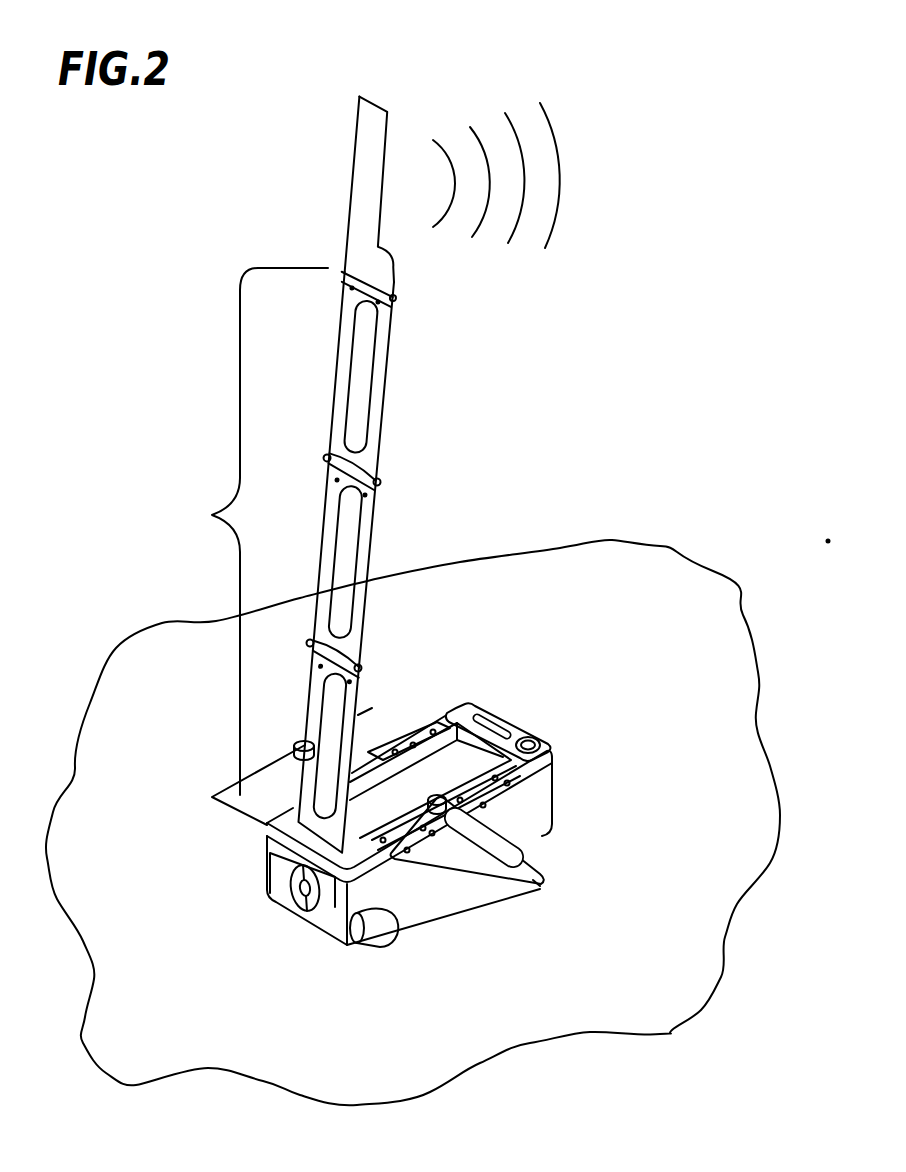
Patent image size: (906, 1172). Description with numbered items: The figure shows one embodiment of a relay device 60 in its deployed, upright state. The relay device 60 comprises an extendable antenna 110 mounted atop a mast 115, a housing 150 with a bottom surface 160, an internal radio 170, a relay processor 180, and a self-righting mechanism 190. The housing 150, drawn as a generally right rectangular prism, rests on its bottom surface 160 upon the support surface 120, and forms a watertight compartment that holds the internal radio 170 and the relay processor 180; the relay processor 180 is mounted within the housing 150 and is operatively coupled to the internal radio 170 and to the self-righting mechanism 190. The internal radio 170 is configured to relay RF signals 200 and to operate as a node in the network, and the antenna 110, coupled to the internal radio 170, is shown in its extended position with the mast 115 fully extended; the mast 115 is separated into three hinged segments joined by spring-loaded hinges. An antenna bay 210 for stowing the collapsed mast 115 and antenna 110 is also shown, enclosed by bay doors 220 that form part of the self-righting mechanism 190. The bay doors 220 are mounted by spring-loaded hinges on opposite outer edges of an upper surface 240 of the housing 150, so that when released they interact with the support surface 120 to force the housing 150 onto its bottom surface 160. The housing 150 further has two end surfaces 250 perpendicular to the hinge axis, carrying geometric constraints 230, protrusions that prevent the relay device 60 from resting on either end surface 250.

The relay device 60 is at (672, 85).
The extendable antenna 110 is at (352, 177).
The mast 115 is at (210, 515).
The support surface 120 is at (678, 623).
The housing 150 is at (540, 790).
The bottom surface 160 is at (556, 850).
The internal radio 170 is at (377, 930).
The relay processor 180 is at (378, 908).
The self-righting mechanism 190 is at (535, 880).
The RF signals 200 is at (555, 225).
The antenna bay 210 is at (527, 732).
The bay doors 220 is at (235, 795).
The geometric constraints 230 is at (270, 858).
The upper surface 240 is at (472, 698).
The end surfaces 250 is at (522, 708).